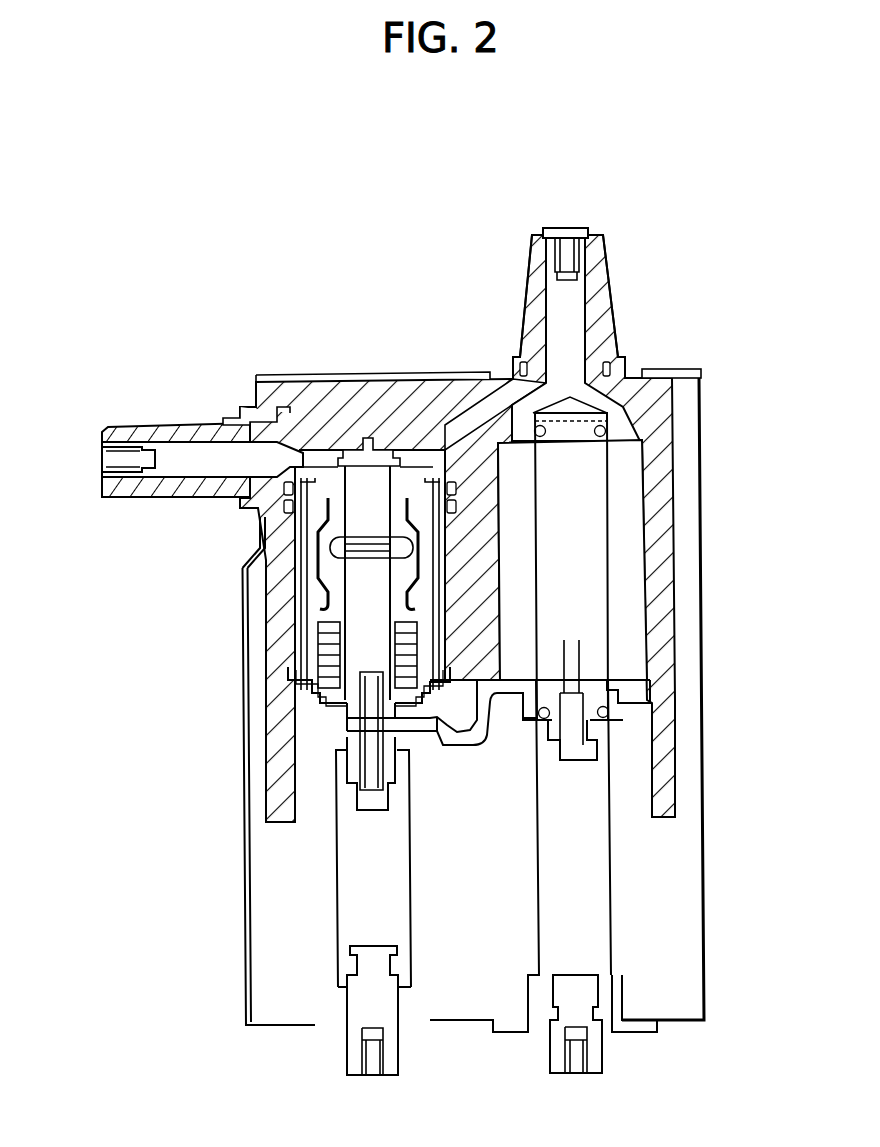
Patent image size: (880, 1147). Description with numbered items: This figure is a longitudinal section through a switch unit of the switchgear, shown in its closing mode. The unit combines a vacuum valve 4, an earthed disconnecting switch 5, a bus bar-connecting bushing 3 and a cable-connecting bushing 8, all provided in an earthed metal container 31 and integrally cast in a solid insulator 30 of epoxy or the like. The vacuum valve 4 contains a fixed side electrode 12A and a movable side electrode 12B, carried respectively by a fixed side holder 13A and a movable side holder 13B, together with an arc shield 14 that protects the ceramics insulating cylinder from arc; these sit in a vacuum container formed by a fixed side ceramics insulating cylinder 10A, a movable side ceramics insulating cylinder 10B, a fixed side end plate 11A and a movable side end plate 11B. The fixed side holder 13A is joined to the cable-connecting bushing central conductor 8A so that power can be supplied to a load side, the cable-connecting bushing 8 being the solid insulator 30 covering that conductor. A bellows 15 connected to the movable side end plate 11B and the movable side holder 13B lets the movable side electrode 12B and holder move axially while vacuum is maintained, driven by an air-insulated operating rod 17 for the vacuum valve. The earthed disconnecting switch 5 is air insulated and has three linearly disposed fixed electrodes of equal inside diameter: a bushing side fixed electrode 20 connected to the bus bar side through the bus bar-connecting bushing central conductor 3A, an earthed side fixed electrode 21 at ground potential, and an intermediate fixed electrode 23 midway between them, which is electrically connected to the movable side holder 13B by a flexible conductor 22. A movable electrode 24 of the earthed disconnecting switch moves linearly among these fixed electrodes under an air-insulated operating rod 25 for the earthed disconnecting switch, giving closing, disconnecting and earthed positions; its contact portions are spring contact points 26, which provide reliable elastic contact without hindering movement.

The bus bar-connecting bushing 3 is at (535, 297).
The bus bar-connecting bushing central conductor 3A is at (575, 322).
The vacuum valve 4 is at (330, 570).
The earthed disconnecting switch 5 is at (620, 585).
The cable-connecting bushing 8 is at (200, 423).
The cable-connecting bushing central conductor 8A is at (117, 465).
The fixed side ceramics insulating cylinder 10A is at (440, 535).
The movable side ceramics insulating cylinder 10B is at (447, 578).
The fixed side end plate 11A is at (313, 475).
The movable side end plate 11B is at (317, 710).
The fixed side electrode 12A is at (343, 547).
The movable side electrode 12B is at (345, 553).
The fixed side holder 13A is at (366, 460).
The movable side holder 13B is at (350, 718).
The arc shield 14 is at (413, 512).
The bellows 15 is at (290, 668).
The air-insulated operating rod for the vacuum valve 17 is at (355, 873).
The bushing side fixed electrode 20 is at (615, 415).
The earthed side fixed electrode 21 is at (638, 1033).
The flexible conductor 22 is at (473, 730).
The intermediate fixed electrode 23 is at (625, 700).
The movable electrode of the earthed disconnecting switch 24 is at (590, 622).
The air-insulated operating rod for the earthed disconnecting switch 25 is at (578, 915).
The spring contact points 26 is at (603, 431).
The solid insulator 30 is at (470, 400).
The earthed metal container 31 is at (420, 374).